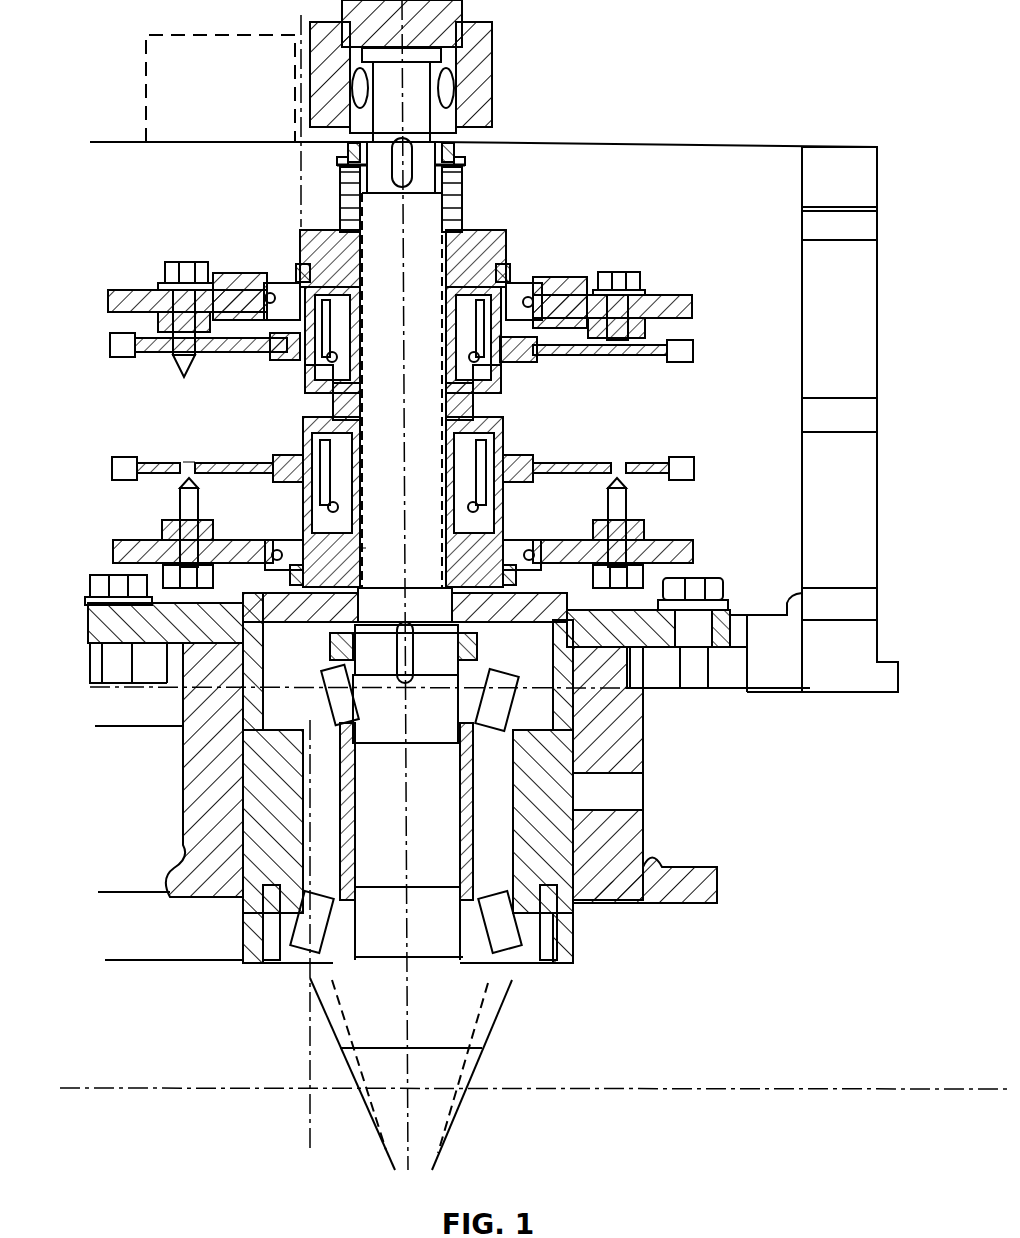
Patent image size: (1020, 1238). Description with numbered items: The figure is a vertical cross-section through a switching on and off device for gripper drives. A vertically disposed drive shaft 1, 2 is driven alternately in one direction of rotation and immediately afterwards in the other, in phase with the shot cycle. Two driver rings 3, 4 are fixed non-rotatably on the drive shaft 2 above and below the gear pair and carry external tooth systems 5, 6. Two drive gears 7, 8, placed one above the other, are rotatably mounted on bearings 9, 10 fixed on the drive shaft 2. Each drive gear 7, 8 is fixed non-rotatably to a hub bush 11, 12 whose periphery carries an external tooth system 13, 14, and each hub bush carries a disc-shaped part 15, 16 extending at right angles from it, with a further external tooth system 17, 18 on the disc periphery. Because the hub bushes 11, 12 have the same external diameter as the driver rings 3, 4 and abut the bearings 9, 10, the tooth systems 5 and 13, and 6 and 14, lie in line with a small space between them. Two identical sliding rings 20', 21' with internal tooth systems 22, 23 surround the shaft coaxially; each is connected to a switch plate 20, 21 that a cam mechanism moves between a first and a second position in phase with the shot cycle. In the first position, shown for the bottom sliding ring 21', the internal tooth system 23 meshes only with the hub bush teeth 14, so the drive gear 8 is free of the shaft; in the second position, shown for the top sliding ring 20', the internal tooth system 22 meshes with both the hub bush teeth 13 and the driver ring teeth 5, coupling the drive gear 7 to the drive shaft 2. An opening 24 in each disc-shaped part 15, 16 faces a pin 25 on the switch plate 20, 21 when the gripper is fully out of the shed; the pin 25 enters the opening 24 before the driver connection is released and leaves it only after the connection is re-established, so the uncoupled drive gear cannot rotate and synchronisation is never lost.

The drive shaft 1 is at (440, 855).
The drive shaft 2 is at (420, 212).
The driver ring 3 is at (483, 250).
The driver ring 4 is at (445, 567).
The external tooth system 5 is at (298, 233).
The external tooth system 6 is at (303, 550).
The drive gear 7 is at (148, 359).
The drive gear 8 is at (153, 455).
The bearing 9 is at (270, 355).
The bearing 10 is at (287, 455).
The hub bush 11 is at (293, 272).
The hub bush 12 is at (303, 426).
The external tooth system 13 is at (303, 375).
The external tooth system 14 is at (307, 509).
The disc-shaped part 15 is at (173, 353).
The disc-shaped part 16 is at (230, 462).
The external tooth system 17 is at (110, 345).
The external tooth system 18 is at (112, 468).
The switch plate 20 is at (404, 299).
The sliding ring 20' is at (401, 272).
The switch plate 21 is at (399, 553).
The sliding ring 21' is at (353, 607).
The internal tooth system 22 is at (297, 268).
The internal tooth system 23 is at (442, 538).
The opening 24 is at (168, 272).
The pin 25 is at (185, 460).